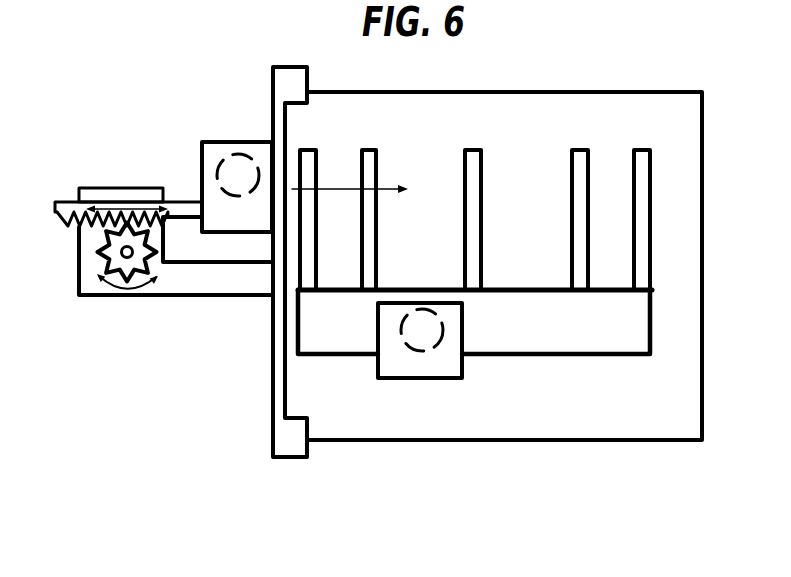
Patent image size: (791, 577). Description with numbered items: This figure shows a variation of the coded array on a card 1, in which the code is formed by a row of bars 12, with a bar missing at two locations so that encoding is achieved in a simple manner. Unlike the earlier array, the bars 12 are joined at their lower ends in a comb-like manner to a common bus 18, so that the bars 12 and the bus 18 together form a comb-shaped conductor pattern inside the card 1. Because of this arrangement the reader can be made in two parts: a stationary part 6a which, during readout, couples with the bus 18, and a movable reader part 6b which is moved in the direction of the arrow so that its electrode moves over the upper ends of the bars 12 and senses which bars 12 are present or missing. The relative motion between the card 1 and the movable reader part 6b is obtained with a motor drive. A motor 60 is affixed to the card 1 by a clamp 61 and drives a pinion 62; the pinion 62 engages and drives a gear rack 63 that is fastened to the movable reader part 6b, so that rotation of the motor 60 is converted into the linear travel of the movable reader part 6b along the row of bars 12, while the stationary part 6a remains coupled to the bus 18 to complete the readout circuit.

The card 1 is at (683, 197).
The bars 12 is at (370, 162).
The bus 18 is at (538, 330).
The stationary part 6a is at (413, 366).
The movable reader part 6b is at (202, 172).
The motor 60 is at (97, 288).
The clamp 61 is at (272, 390).
The pinion 62 is at (152, 260).
The gear rack 63 is at (69, 208).